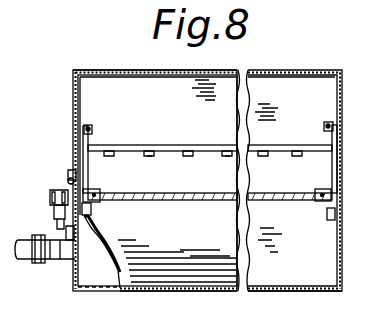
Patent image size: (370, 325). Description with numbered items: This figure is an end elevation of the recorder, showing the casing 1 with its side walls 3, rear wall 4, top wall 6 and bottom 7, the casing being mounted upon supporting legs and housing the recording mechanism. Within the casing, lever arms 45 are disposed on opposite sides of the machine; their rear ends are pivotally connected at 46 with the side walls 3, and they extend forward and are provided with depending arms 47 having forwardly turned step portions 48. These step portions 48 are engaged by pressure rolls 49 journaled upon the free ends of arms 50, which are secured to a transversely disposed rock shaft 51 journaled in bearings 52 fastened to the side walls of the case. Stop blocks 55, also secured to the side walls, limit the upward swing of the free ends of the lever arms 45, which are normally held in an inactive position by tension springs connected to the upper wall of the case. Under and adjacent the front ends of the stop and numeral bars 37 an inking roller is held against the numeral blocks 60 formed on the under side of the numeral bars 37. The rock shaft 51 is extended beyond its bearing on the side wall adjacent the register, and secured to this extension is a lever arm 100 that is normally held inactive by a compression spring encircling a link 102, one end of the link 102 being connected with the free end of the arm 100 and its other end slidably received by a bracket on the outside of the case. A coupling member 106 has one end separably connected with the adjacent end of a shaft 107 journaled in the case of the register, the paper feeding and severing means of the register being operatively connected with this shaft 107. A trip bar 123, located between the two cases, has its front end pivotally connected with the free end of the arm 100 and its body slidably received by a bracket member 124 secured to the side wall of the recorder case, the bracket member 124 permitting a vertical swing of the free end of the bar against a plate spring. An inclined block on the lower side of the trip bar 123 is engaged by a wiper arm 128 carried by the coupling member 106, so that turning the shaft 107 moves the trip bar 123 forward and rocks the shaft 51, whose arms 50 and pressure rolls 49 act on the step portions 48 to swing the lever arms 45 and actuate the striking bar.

The casing 1 is at (188, 293).
The side walls 3 is at (73, 86).
The rear wall 4 is at (110, 78).
The top wall 6 is at (126, 70).
The bottom 7 is at (301, 290).
The numeral bars 37 is at (226, 153).
The lever arms 45 is at (156, 145).
The pivotal connection 46 is at (89, 128).
The depending arms 47 is at (79, 162).
The step portions 48 is at (88, 221).
The pressure rolls 49 is at (92, 207).
The arms 50 is at (200, 251).
The rock shaft 51 is at (213, 196).
The bearings 52 is at (91, 193).
The stop blocks 55 is at (85, 127).
The numeral blocks 60 is at (226, 158).
The lever arm 100 is at (54, 214).
The link 102 is at (52, 198).
The coupling member 106 is at (42, 265).
The shaft 107 is at (22, 261).
The trip bar 123 is at (72, 174).
The bracket member 124 is at (68, 180).
The wiper arm 128 is at (60, 250).